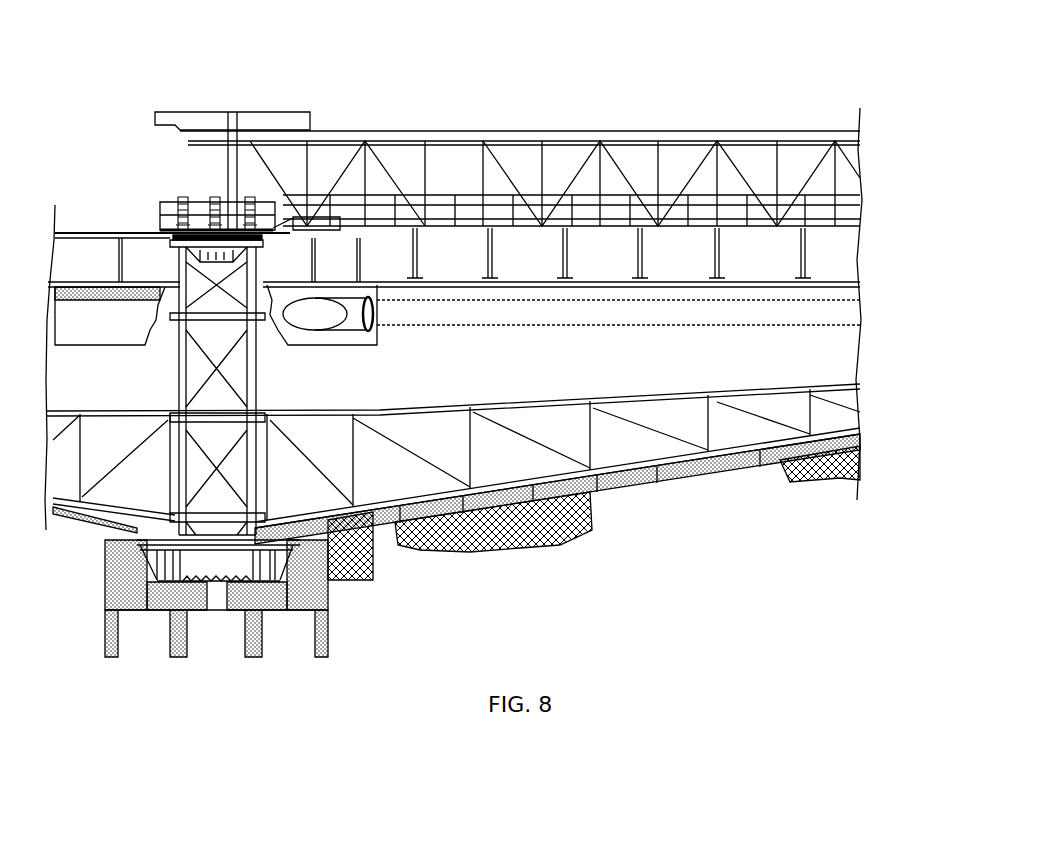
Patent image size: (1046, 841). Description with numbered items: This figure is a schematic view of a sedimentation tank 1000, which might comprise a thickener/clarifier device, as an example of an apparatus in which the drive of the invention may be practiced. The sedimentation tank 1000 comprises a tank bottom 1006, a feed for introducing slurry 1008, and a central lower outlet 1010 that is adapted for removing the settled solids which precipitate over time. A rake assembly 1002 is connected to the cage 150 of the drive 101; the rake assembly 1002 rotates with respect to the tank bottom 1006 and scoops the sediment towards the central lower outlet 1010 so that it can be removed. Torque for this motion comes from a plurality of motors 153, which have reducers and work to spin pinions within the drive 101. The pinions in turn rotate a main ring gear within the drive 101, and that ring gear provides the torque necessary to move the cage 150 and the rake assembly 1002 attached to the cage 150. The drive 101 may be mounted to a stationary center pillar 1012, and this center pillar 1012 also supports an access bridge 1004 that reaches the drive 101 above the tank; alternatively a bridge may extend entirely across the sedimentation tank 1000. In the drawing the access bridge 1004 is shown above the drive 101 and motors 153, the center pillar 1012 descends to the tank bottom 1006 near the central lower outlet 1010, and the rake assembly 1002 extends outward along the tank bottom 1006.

The sedimentation tank 1000 is at (731, 64).
The access bridge 1004 is at (428, 220).
The motors 153 is at (225, 199).
The drive 101 is at (147, 230).
The cage 150 is at (166, 242).
The stationary center pillar 1012 is at (222, 375).
The feed for introducing slurry 1008 is at (803, 314).
The rake assembly 1002 is at (383, 410).
The tank bottom 1006 is at (634, 484).
The central lower outlet 1010 is at (200, 597).